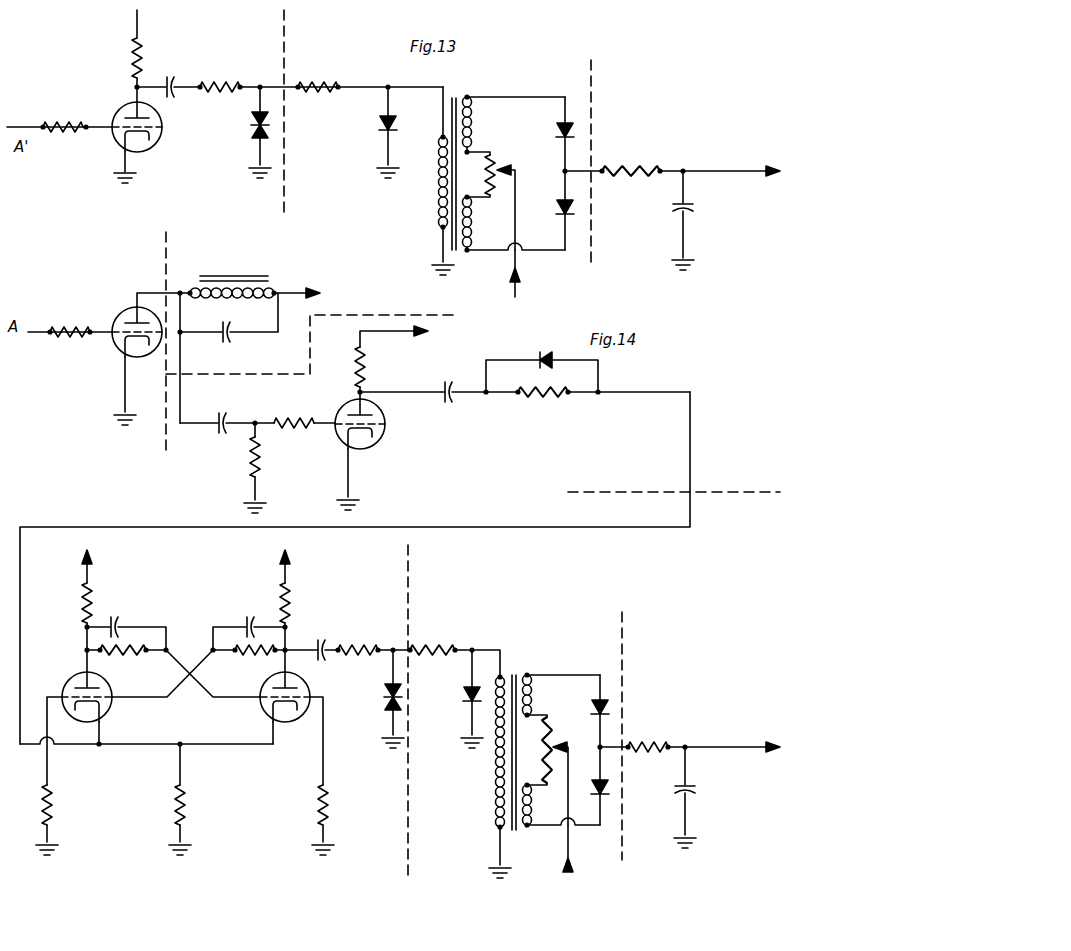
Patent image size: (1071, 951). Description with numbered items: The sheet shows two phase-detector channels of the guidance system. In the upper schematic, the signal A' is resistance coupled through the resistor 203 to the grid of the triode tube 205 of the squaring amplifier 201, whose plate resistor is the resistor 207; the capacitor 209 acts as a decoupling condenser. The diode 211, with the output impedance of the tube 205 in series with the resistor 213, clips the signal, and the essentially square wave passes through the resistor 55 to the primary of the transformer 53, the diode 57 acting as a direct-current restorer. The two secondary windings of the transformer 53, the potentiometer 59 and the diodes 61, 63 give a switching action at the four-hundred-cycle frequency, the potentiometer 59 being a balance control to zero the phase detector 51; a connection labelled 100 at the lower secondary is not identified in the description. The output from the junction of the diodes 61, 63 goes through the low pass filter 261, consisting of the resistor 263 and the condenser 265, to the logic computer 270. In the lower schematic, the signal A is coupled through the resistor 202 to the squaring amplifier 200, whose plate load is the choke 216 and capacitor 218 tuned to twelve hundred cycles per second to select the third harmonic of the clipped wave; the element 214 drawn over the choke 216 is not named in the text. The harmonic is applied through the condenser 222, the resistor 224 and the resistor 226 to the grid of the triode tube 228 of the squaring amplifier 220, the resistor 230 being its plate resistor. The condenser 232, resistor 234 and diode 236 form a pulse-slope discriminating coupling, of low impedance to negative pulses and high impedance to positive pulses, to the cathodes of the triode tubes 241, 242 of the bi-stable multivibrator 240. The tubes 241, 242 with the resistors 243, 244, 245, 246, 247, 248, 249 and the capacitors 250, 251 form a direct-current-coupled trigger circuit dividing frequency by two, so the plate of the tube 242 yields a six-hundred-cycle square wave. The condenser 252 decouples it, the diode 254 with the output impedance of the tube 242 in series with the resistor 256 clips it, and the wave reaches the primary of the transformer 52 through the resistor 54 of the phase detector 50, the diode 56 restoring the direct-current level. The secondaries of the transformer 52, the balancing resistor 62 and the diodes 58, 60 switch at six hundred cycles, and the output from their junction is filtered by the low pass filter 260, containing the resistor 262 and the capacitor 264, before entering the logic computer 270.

In FIG. 13, the squaring amplifier 201 is at (185, 52).
In FIG. 13, the resistor 203 is at (60, 124).
In FIG. 13, the triode tube 205 is at (157, 142).
In FIG. 13, the resistor 207 is at (132, 54).
In FIG. 13, the capacitor 209 is at (176, 80).
In FIG. 13, the diode 211 is at (250, 131).
In FIG. 13, the resistor 213 is at (220, 92).
In FIG. 13, the resistor 55 is at (326, 86).
In FIG. 13, the diode 57 is at (379, 129).
In FIG. 13, the phase detector 51 is at (498, 169).
In FIG. 13, the transformer 53 is at (466, 262).
In FIG. 13, the potentiometer 59 is at (492, 157).
In FIG. 13, the diode 61 is at (560, 138).
In FIG. 13, the diode 63 is at (560, 212).
In FIG. 13, the reference voltage input 100 is at (531, 273).
In FIG. 14, the reference voltage input 100 is at (569, 858).
In FIG. 13, the low pass filter 261 is at (607, 130).
In FIG. 13, the resistor 263 is at (643, 167).
In FIG. 13, the condenser 265 is at (697, 208).
In FIG. 13, the logic computer 270 is at (771, 163).
In FIG. 14, the logic computer 270 is at (774, 740).
In FIG. 14, the squaring amplifier 200 is at (90, 290).
In FIG. 14, the resistor 202 is at (66, 338).
In FIG. 14, the inductor core 214 is at (233, 284).
In FIG. 14, the choke 216 is at (266, 282).
In FIG. 14, the capacitor 218 is at (227, 340).
In FIG. 14, the squaring amplifier 220 is at (220, 440).
In FIG. 14, the condenser 222 is at (228, 420).
In FIG. 14, the resistor 224 is at (260, 462).
In FIG. 14, the resistor 226 is at (286, 420).
In FIG. 14, the triode tube 228 is at (383, 444).
In FIG. 14, the resistor 230 is at (364, 376).
In FIG. 14, the condenser 232 is at (450, 405).
In FIG. 14, the resistor 234 is at (539, 400).
In FIG. 14, the diode 236 is at (543, 352).
In FIG. 14, the bi-stable multivibrator 240 is at (118, 848).
In FIG. 14, the triode tube 241 is at (70, 683).
In FIG. 14, the triode tube 242 is at (265, 712).
In FIG. 14, the resistor 243 is at (97, 594).
In FIG. 14, the resistor 244 is at (55, 808).
In FIG. 14, the resistor 245 is at (117, 656).
In FIG. 14, the resistor 246 is at (186, 808).
In FIG. 14, the resistor 247 is at (318, 806).
In FIG. 14, the resistor 248 is at (258, 656).
In FIG. 14, the resistor 249 is at (292, 598).
In FIG. 14, the capacitor 250 is at (119, 622).
In FIG. 14, the capacitor 251 is at (250, 622).
In FIG. 14, the condenser 252 is at (322, 642).
In FIG. 14, the diode 254 is at (385, 707).
In FIG. 14, the resistor 256 is at (356, 655).
In FIG. 14, the phase detector circuit 50 is at (490, 608).
In FIG. 14, the transformer 52 is at (520, 675).
In FIG. 14, the resistor 54 is at (432, 646).
In FIG. 14, the diode 56 is at (465, 712).
In FIG. 14, the diode 58 is at (596, 722).
In FIG. 14, the diode 60 is at (596, 786).
In FIG. 14, the resistor 62 is at (552, 718).
In FIG. 14, the low pass filter 260 is at (675, 668).
In FIG. 14, the resistor 262 is at (652, 742).
In FIG. 14, the capacitor 264 is at (698, 790).